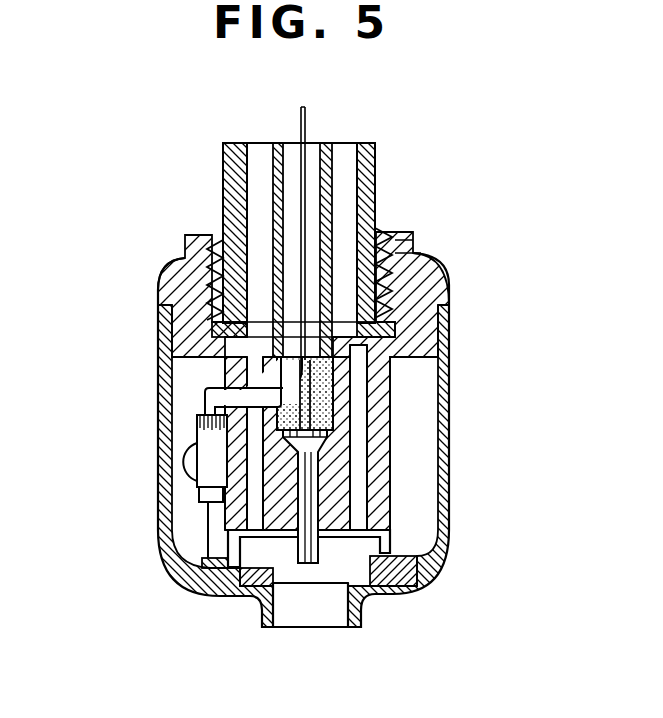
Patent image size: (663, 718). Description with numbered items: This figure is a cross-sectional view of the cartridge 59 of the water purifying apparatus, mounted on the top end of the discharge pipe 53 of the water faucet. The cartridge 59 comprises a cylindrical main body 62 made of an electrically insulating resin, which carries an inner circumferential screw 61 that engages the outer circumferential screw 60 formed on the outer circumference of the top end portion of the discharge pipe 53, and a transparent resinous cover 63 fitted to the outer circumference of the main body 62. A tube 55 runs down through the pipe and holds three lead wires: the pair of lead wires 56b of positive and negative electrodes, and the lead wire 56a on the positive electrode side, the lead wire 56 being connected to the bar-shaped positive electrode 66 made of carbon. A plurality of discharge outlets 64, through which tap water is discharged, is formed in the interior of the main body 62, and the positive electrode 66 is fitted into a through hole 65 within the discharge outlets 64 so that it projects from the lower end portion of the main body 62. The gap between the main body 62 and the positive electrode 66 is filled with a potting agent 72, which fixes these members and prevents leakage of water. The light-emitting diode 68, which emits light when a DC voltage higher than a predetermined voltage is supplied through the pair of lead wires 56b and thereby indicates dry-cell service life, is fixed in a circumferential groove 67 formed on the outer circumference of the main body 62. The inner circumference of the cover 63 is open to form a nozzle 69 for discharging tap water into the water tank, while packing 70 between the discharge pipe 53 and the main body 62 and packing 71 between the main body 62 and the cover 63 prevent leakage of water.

The discharge pipe 53 is at (228, 171).
The tube 55 is at (378, 183).
The lead wire 56 is at (305, 121).
The lead wire 56a is at (338, 428).
The pair of lead wires 56b is at (250, 396).
The cartridge 59 is at (462, 519).
The outer circumferential screw 60 is at (390, 225).
The inner circumferential screw 61 is at (410, 275).
The cylindrical main body 62 is at (432, 318).
The transparent resinous cover 63 is at (440, 403).
The discharge outlets 64 is at (357, 455).
The through hole 65 is at (300, 488).
The positive electrode 66 is at (298, 498).
The circumferential groove 67 is at (205, 366).
The light-emitting diode 68 is at (197, 445).
The nozzle 69 is at (325, 612).
The packing 70 is at (212, 318).
The packing 71 is at (224, 596).
The potting agent 72 is at (335, 415).